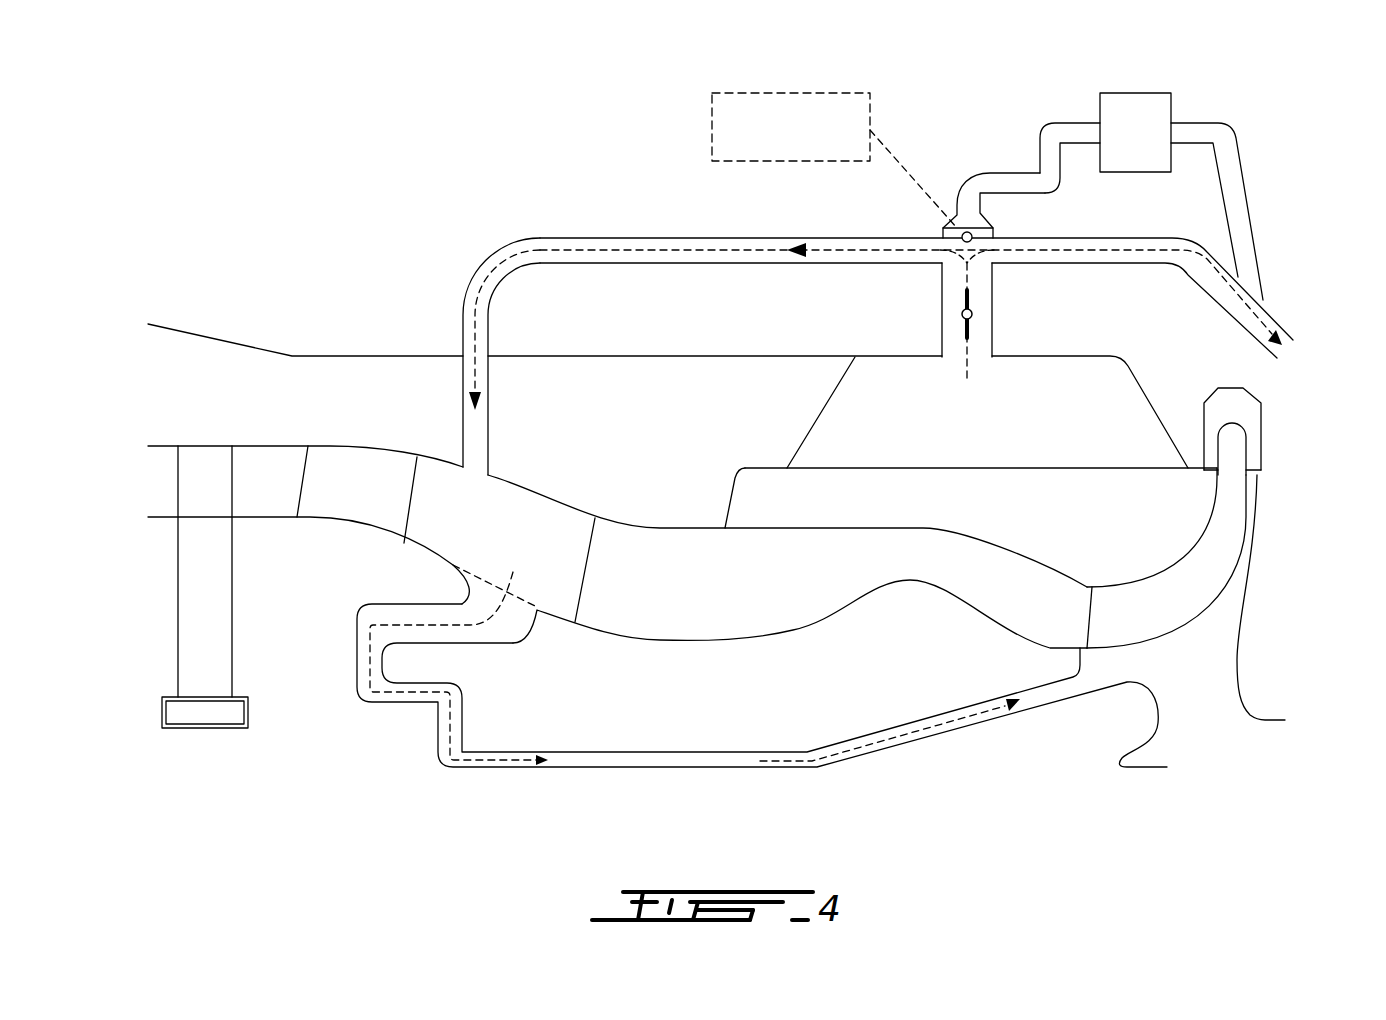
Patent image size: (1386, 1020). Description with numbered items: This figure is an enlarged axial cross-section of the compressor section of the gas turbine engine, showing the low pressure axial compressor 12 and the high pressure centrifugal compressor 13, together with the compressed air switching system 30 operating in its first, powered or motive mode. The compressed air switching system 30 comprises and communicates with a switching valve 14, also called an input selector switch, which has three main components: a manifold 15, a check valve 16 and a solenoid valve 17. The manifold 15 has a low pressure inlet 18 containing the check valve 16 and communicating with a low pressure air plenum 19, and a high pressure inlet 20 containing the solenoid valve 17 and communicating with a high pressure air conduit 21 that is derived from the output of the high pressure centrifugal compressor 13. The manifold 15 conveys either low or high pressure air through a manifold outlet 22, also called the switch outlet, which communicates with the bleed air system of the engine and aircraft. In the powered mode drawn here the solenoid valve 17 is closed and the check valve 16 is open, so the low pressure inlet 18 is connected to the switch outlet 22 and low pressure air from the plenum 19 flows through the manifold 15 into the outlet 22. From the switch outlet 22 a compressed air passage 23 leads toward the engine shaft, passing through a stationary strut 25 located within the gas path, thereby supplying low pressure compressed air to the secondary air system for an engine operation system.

The low pressure axial compressor 12 is at (275, 755).
The high pressure centrifugal compressor 13 is at (1188, 665).
The switching valve 14 is at (988, 200).
The manifold 15 is at (960, 232).
The check valve 16 is at (942, 310).
The solenoid valve 17 is at (1138, 112).
The low pressure inlet 18 is at (980, 347).
The low pressure air plenum 19 is at (1046, 427).
The high pressure inlet 20 is at (1082, 130).
The high pressure air conduit 21 is at (1238, 208).
The manifold outlet 22 is at (868, 238).
The compressed air passage 23 is at (488, 262).
The stationary strut 25 is at (438, 483).
The compressed air switching system 30 is at (807, 138).